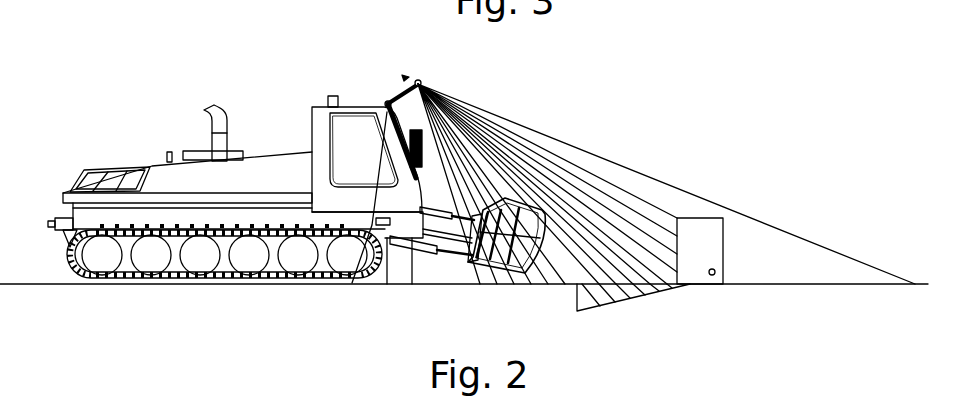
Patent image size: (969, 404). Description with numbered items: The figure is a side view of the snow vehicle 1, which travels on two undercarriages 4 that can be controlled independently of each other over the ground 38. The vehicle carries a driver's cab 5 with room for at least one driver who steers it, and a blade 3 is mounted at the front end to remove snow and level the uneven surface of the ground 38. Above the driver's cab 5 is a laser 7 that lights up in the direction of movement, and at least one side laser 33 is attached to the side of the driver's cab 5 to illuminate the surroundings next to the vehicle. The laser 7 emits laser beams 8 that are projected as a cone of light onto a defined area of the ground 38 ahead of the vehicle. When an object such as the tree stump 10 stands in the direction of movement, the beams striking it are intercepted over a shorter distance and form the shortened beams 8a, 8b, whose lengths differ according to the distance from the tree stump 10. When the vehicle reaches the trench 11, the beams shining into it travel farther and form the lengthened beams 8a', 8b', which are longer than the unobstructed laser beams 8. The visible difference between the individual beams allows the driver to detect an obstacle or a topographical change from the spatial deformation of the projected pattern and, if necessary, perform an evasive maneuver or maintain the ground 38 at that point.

The snow vehicle 1 is at (208, 68).
The blade 3 is at (470, 262).
The undercarriages 4 is at (230, 283).
The driver's cab 5 is at (317, 107).
The laser 7 is at (412, 80).
The laser beams 8 is at (666, 195).
The laser beam 8a is at (510, 184).
The laser beam 8b is at (525, 184).
The laser beam 8a' is at (605, 323).
The laser beam 8b' is at (652, 323).
The tree stump 10 is at (723, 263).
The trench 11 is at (587, 308).
The side laser 33 is at (387, 100).
The ground 38 is at (842, 286).